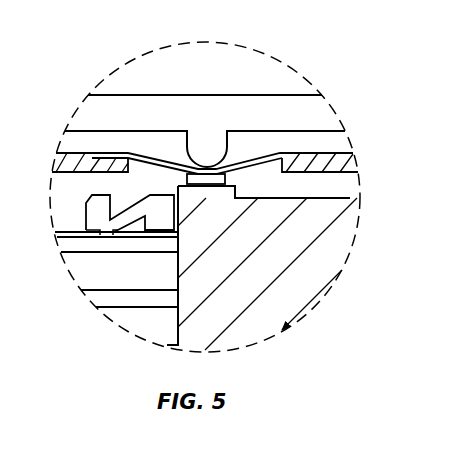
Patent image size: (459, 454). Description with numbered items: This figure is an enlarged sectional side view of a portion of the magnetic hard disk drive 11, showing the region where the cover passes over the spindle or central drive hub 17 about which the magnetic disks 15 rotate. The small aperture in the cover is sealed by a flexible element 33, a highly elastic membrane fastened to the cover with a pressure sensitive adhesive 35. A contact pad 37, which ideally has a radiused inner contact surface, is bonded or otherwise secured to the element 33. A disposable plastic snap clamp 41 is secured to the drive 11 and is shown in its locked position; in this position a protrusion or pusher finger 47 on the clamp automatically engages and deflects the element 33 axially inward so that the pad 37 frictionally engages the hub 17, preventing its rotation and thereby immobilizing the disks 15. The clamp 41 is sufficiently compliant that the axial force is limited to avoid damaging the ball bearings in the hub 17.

The magnetic hard disk file or drive 11 is at (72, 78).
The magnetic disks 15 is at (110, 290).
The spindle or central drive hub 17 is at (242, 302).
The flexible element 33 is at (250, 156).
The pressure sensitive adhesive 35 is at (293, 153).
The contact pad 37 is at (215, 178).
The disposable plastic snap clamp 41 is at (152, 95).
The protrusion or pusher finger 47 is at (207, 140).